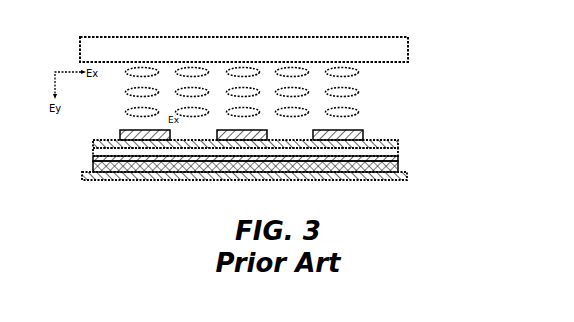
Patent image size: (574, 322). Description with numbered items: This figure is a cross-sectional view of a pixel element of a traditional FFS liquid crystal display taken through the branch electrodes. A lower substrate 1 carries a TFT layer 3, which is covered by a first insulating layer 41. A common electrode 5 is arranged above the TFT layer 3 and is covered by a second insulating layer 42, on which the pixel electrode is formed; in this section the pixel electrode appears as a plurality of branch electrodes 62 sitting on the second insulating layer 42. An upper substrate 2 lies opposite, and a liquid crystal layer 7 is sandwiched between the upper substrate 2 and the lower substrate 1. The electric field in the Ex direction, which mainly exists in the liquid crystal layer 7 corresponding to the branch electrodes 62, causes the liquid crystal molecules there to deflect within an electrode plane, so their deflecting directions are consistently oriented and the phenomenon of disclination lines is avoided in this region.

The lower substrate 1 is at (407, 175).
The upper substrate 2 is at (408, 48).
The TFT layer 3 is at (93, 168).
The common electrode 5 is at (93, 157).
The liquid crystal layer 7 is at (418, 117).
The first insulating layer 41 is at (398, 157).
The second insulating layer 42 is at (398, 143).
The branch electrodes 62 is at (120, 132).